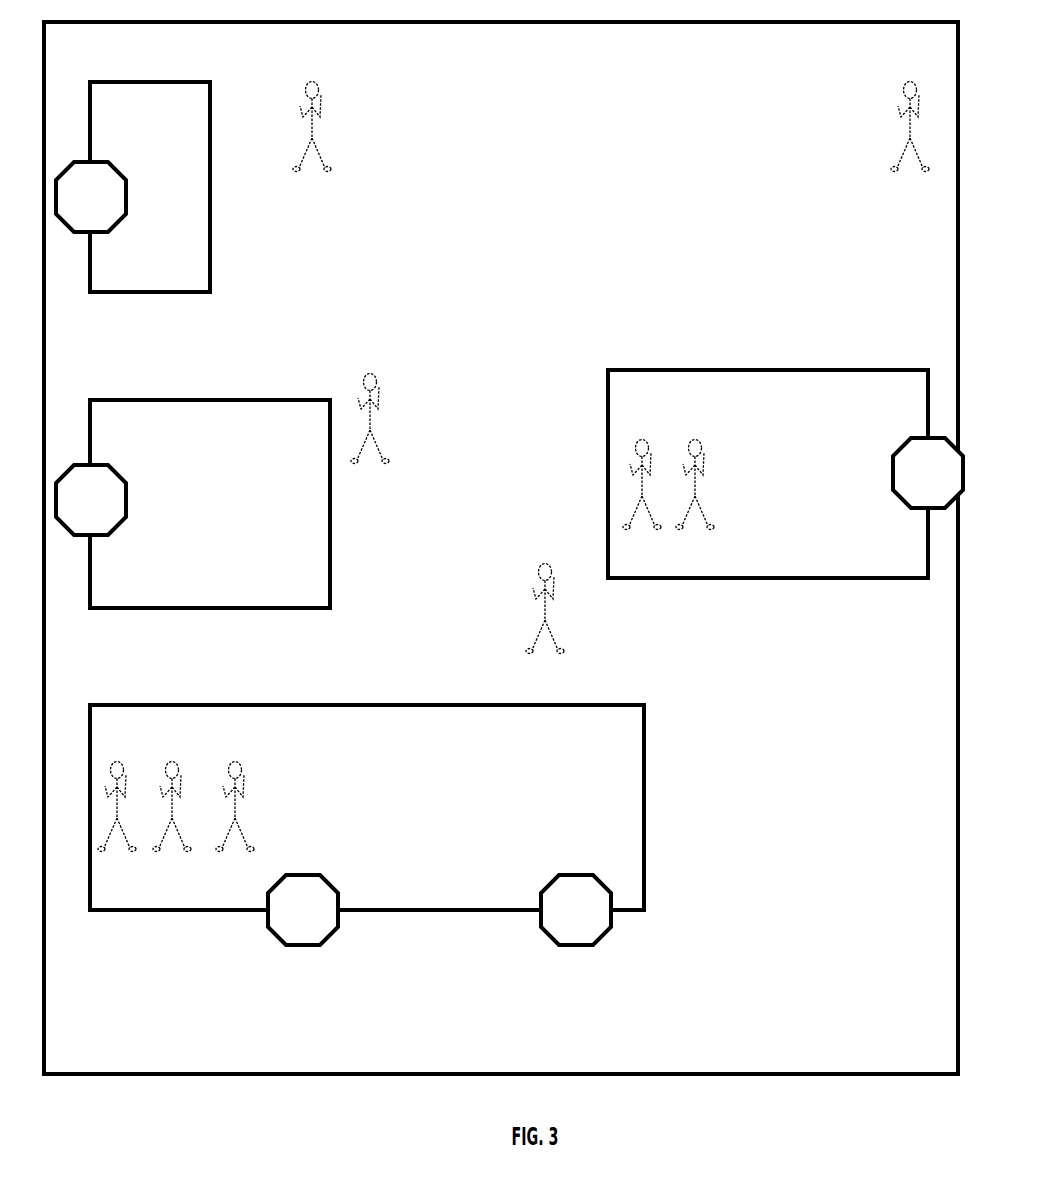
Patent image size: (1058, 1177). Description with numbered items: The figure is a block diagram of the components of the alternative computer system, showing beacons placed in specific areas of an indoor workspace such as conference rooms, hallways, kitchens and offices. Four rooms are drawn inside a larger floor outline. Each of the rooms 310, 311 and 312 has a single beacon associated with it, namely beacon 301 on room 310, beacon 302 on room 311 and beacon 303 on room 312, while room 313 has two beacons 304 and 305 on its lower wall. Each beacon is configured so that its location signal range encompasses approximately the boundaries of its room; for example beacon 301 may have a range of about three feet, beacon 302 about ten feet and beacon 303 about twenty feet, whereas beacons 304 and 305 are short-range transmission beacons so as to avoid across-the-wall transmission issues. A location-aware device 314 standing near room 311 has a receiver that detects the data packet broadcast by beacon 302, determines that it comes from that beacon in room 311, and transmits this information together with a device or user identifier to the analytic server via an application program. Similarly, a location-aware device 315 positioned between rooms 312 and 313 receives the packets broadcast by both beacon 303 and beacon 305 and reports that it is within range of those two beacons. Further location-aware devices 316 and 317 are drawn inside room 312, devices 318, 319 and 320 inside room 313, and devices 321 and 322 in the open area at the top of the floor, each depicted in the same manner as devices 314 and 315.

The beacon 301 is at (91, 197).
The beacon 302 is at (91, 500).
The beacon 303 is at (928, 473).
The beacon 304 is at (303, 910).
The beacon 305 is at (576, 910).
The room 310 is at (150, 187).
The room 311 is at (210, 504).
The room 312 is at (768, 474).
The room 313 is at (367, 807).
The location-aware device 314 is at (370, 404).
The location-aware device 315 is at (545, 595).
The person / user 316 is at (642, 471).
The person / user 317 is at (695, 471).
The person / user 318 is at (117, 793).
The person / user 319 is at (172, 793).
The person / user 320 is at (235, 793).
The person / user 321 is at (312, 112).
The person / user 322 is at (910, 112).